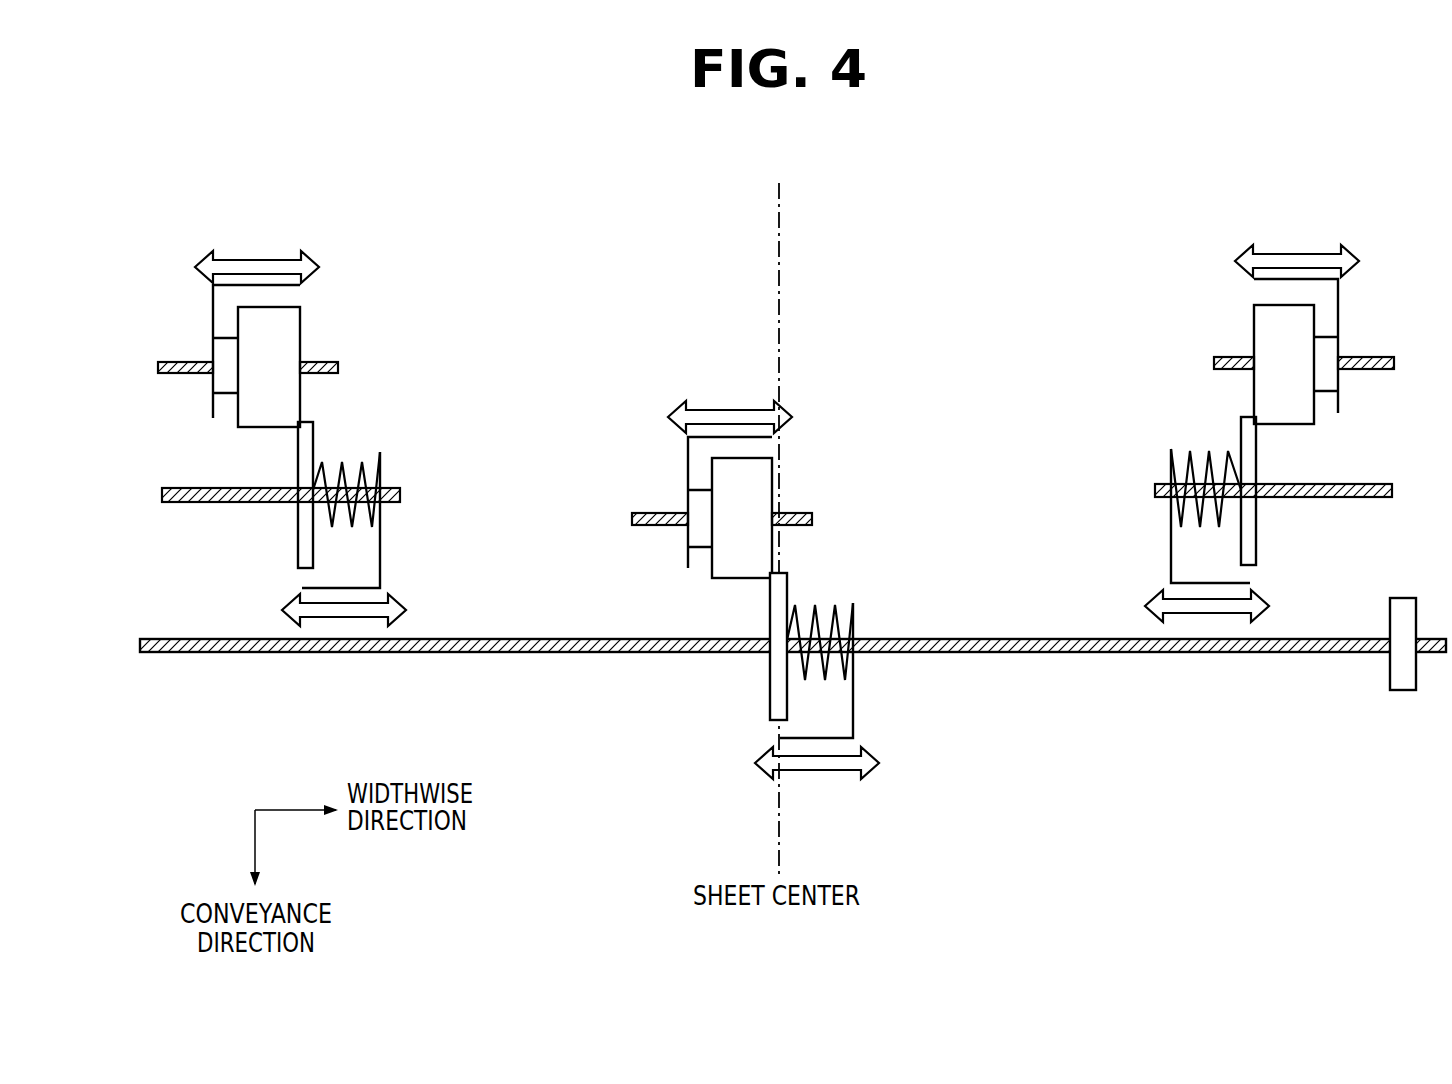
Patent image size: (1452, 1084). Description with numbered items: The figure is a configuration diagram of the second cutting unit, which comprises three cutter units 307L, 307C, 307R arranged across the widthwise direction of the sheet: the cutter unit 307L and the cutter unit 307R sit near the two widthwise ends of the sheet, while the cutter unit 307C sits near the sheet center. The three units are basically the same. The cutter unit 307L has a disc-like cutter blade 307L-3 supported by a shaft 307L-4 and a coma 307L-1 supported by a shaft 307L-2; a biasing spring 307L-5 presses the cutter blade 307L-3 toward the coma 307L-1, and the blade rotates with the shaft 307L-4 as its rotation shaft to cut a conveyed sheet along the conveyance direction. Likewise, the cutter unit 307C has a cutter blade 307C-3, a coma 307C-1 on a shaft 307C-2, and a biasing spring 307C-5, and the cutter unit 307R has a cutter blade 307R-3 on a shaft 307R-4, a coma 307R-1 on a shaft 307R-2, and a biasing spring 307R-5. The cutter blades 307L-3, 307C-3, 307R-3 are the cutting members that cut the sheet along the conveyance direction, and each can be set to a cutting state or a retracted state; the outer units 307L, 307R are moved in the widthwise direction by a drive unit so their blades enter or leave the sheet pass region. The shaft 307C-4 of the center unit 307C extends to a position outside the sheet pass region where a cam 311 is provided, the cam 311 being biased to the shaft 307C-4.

The cutter unit 307L is at (316, 359).
The coma 307L-1 is at (300, 320).
The shaft 307L-2 is at (340, 363).
The cutter blade 307L-3 is at (297, 453).
The shaft 307L-4 is at (400, 490).
The biasing spring 307L-5 is at (380, 543).
The cutter unit 307C is at (809, 543).
The coma 307C-1 is at (772, 470).
The shaft 307C-2 is at (812, 515).
The cutter blade 307C-3 is at (770, 695).
The shaft 307C-4 is at (1228, 652).
The biasing spring 307C-5 is at (853, 697).
The cutter unit 307R is at (1214, 357).
The coma 307R-1 is at (1254, 314).
The shaft 307R-2 is at (1214, 359).
The cutter blade 307R-3 is at (1256, 454).
The shaft 307R-4 is at (1155, 488).
The biasing spring 307R-5 is at (1171, 555).
The cam 311 is at (1401, 598).